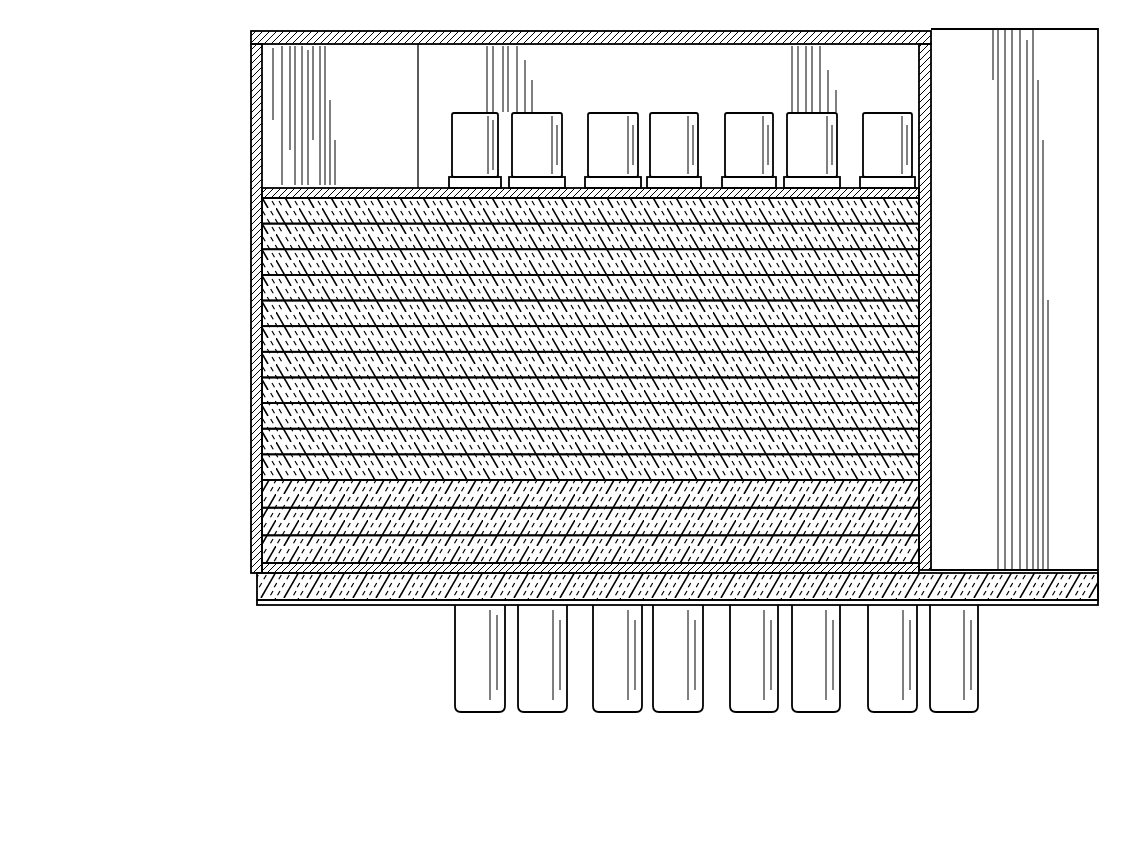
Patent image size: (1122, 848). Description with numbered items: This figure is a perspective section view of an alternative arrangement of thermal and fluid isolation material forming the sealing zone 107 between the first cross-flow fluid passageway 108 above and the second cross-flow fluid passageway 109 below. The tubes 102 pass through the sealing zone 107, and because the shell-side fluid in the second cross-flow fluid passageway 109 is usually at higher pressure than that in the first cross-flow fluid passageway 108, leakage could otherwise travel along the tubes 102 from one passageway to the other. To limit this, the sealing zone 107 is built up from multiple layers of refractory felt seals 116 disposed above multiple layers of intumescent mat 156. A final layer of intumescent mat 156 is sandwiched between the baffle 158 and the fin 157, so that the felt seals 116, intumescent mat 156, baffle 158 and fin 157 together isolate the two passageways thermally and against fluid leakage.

The tubes 102 is at (542, 698).
The sealing zone 107 is at (165, 197).
The first cross-flow fluid passageway 108 is at (252, 123).
The second cross-flow fluid passageway 109 is at (388, 746).
The refractory felt seals 116 is at (262, 328).
The intumescent mat 156 is at (268, 516).
The fin 157 is at (372, 606).
The baffle 158 is at (252, 194).